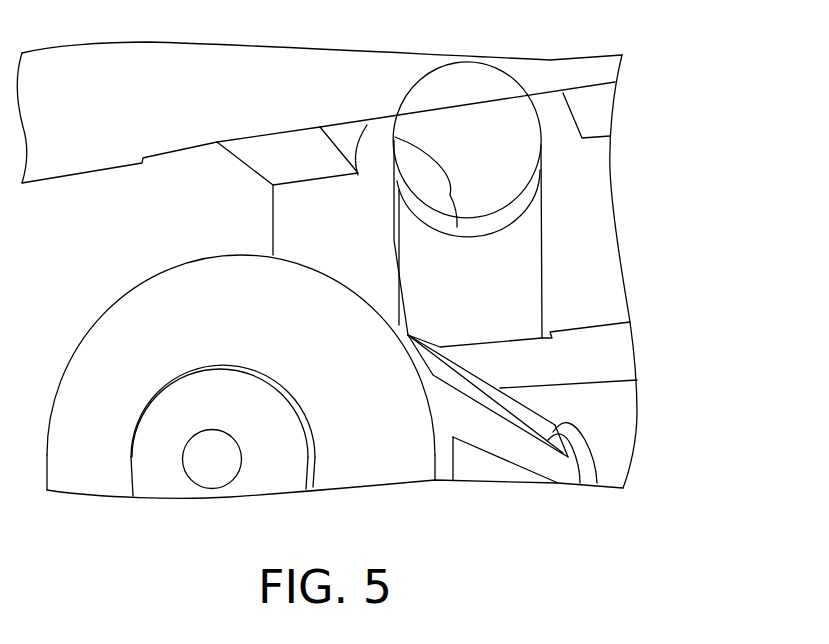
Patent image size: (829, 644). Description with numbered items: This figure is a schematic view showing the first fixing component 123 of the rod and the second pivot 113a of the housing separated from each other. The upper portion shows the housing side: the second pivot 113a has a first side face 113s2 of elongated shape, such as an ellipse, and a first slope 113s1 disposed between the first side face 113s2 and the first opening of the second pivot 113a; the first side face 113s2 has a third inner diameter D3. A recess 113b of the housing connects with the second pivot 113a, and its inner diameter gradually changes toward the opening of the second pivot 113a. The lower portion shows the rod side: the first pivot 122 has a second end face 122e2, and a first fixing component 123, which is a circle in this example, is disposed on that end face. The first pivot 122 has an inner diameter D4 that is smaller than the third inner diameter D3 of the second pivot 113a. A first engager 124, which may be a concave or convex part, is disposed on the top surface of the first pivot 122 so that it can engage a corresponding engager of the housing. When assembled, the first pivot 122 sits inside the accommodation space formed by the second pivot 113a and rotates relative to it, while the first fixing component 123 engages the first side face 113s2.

The second pivot 113a is at (513, 138).
The recess 113b is at (508, 277).
The first slope 113s1 is at (393, 125).
The first side face 113s2 is at (492, 133).
The third inner diameter D3 is at (520, 185).
The first pivot 122 is at (375, 462).
The second end face 122e2 is at (435, 440).
The first fixing component 123 is at (265, 478).
The inner diameter of the first pivot D4 is at (207, 462).
The first engager 124 is at (488, 467).